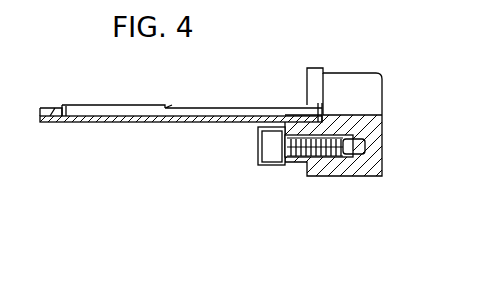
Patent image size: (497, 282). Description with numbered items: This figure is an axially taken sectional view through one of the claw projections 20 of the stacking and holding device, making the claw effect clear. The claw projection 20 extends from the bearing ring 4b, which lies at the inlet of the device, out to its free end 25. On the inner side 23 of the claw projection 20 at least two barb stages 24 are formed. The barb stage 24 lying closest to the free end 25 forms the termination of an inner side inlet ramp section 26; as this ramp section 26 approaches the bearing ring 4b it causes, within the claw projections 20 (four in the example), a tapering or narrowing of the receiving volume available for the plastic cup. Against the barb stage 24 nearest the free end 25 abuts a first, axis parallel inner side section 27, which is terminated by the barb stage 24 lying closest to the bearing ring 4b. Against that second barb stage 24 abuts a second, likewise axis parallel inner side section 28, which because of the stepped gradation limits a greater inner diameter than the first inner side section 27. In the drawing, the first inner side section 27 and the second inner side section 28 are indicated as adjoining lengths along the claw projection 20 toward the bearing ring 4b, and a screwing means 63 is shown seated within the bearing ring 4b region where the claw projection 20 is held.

The claw projection 20 is at (171, 109).
The inner side 23 is at (233, 112).
The barb stage 24 is at (82, 110).
The free end 25 is at (52, 124).
The ramp section 26 is at (52, 107).
The axis parallel, first inner section 27 is at (167, 198).
The axis parallel, second inner section 28 is at (308, 198).
The bearing ring 4b is at (350, 132).
The screwing means 63 is at (327, 155).